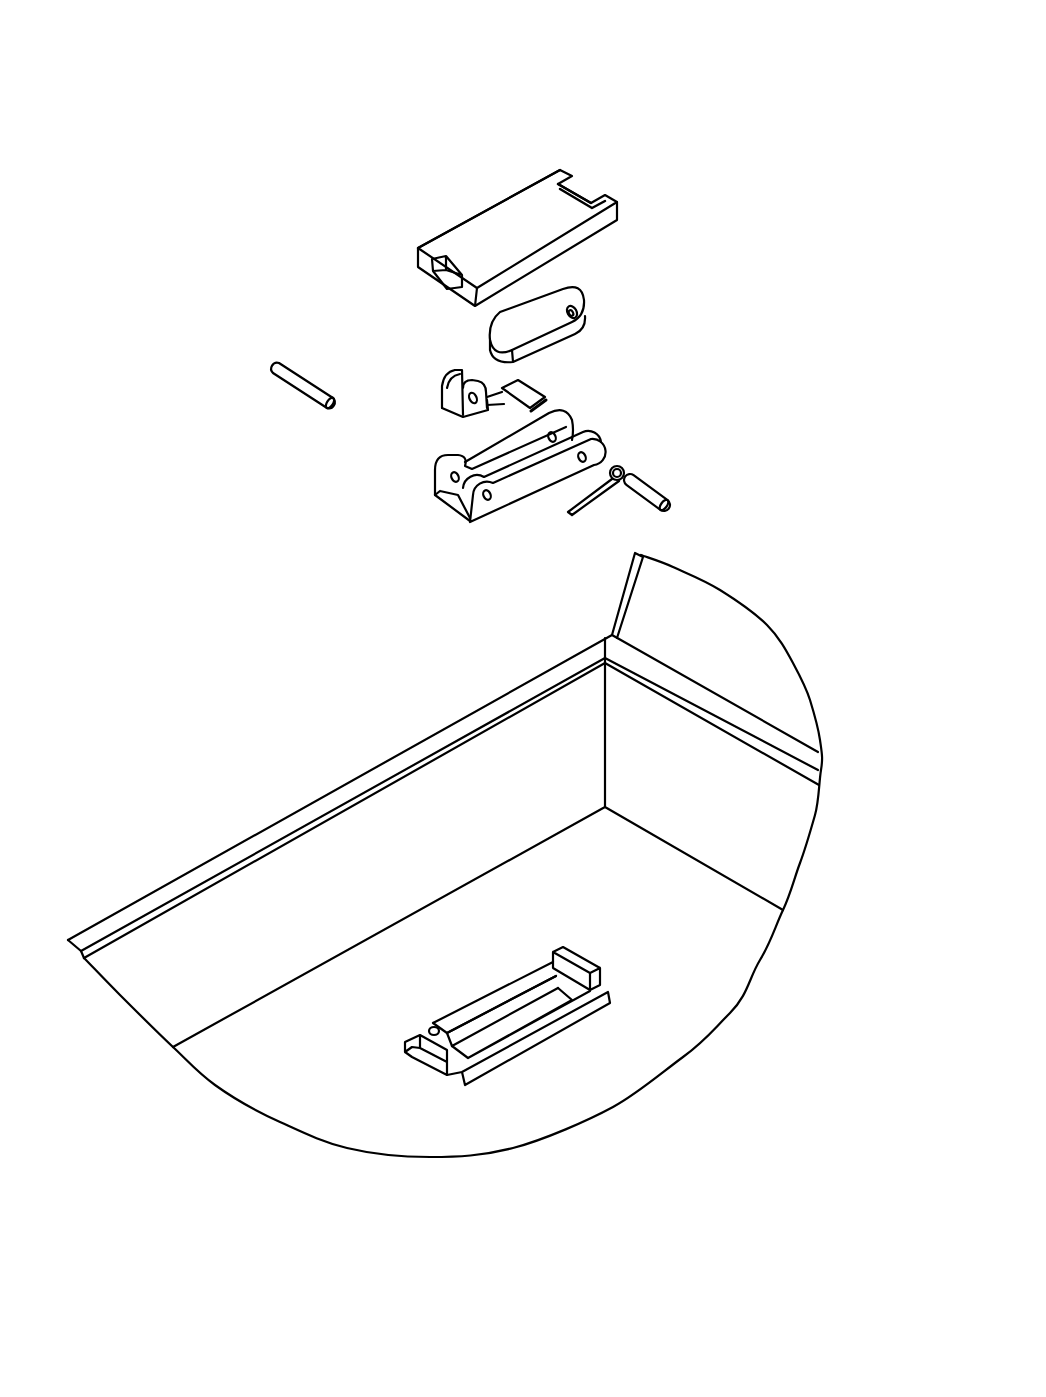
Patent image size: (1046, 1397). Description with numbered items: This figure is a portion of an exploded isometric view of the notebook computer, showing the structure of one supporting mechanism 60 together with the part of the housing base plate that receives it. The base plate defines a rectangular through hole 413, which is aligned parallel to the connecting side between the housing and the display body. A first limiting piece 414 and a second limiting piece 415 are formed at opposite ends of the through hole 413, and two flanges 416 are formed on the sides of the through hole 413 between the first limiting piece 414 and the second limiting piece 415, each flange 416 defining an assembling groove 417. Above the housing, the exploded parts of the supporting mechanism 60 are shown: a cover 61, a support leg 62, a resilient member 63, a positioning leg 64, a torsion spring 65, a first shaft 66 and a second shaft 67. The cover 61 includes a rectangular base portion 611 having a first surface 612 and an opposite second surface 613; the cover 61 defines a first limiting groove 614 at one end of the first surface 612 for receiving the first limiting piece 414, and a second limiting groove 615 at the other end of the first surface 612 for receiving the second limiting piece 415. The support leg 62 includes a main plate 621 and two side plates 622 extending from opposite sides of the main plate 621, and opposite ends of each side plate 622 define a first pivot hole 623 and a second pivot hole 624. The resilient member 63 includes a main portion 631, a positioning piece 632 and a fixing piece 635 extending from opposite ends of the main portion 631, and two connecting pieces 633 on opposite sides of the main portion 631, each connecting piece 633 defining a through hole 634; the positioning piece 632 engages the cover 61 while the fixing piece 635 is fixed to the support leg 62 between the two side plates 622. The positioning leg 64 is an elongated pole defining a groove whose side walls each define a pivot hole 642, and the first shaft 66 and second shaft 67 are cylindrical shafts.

The supporting mechanism 60 is at (620, 72).
The cover 61 is at (412, 226).
The base portion 611 is at (528, 210).
The first surface 612 is at (481, 216).
The second surface 613 is at (606, 243).
The first limiting groove 614 is at (583, 194).
The second limiting groove 615 is at (443, 278).
The positioning leg 64 is at (560, 294).
The pivot hole 642 is at (576, 316).
The resilient member 63 is at (355, 441).
The main portion 631 is at (486, 420).
The positioning piece 632 is at (441, 386).
The connecting piece 633 is at (459, 368).
The through hole 634 is at (450, 410).
The fixing piece 635 is at (531, 386).
The first shaft 66 is at (300, 390).
The support leg 62 is at (400, 489).
The main plate 621 is at (455, 503).
The side plate 622 is at (525, 470).
The first pivot hole 623 is at (487, 500).
The second pivot hole 624 is at (588, 457).
The torsion spring 65 is at (624, 472).
The second shaft 67 is at (661, 493).
The rectangular through hole 413 is at (500, 1048).
The first limiting piece 414 is at (590, 958).
The second limiting piece 415 is at (433, 1058).
The flange 416 is at (495, 997).
The assembling groove 417 is at (431, 1029).